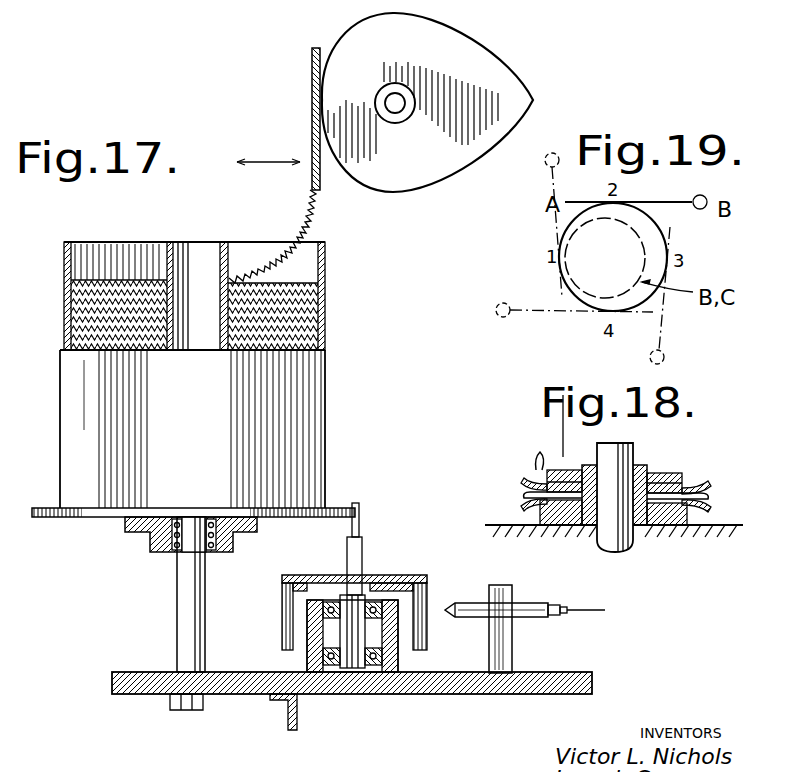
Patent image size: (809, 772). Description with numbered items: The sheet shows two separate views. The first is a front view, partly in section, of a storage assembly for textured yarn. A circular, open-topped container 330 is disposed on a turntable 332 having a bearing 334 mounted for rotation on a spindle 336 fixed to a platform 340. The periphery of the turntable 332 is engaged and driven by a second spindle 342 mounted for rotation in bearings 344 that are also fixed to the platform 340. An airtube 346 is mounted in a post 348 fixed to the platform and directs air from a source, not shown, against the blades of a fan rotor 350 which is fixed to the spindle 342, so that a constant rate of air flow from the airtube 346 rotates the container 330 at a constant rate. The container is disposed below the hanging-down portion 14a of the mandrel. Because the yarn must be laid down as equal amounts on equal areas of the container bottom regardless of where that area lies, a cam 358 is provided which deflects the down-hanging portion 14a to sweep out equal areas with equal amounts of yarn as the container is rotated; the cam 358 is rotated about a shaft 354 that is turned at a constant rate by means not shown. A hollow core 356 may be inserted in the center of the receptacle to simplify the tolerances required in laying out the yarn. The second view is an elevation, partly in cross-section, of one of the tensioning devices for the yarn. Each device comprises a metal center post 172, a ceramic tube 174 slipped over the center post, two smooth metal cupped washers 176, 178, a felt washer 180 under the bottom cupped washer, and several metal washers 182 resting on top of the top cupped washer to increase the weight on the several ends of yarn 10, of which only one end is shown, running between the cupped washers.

In FIG. 17, the hanging-down portion of the mandrel 14a is at (312, 88).
In FIG. 17, the shaft 354 is at (402, 111).
In FIG. 17, the cam 358 is at (392, 193).
In FIG. 17, the hollow core 356 is at (235, 221).
In FIG. 17, the container 330 is at (326, 413).
In FIG. 17, the turntable 332 is at (83, 514).
In FIG. 17, the bearing 334 is at (150, 546).
In FIG. 17, the spindle 336 is at (200, 605).
In FIG. 17, the platform 340 is at (125, 671).
In FIG. 17, the spindle 342 is at (359, 517).
In FIG. 17, the bearings 344 is at (330, 602).
In FIG. 17, the fan rotor 350 is at (392, 577).
In FIG. 17, the post 348 is at (490, 660).
In FIG. 17, the airtube 346 is at (537, 616).
In FIG. 18, the metal washers 182 is at (543, 445).
In FIG. 18, the metal center post 172 is at (633, 448).
In FIG. 18, the ceramic tube 174 is at (642, 466).
In FIG. 18, the yarn 10 is at (686, 490).
In FIG. 18, the cupped washer 178 is at (710, 485).
In FIG. 18, the cupped washer 176 is at (707, 512).
In FIG. 18, the felt washer 180 is at (680, 520).